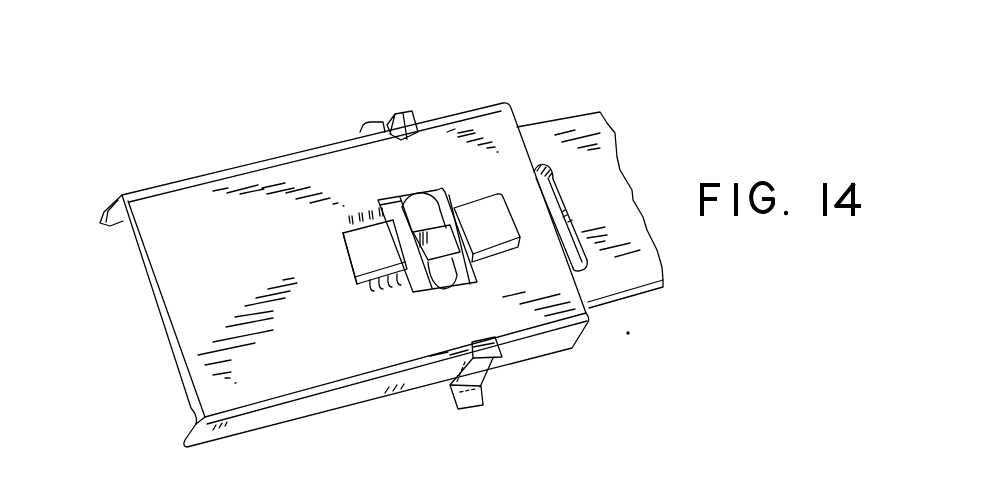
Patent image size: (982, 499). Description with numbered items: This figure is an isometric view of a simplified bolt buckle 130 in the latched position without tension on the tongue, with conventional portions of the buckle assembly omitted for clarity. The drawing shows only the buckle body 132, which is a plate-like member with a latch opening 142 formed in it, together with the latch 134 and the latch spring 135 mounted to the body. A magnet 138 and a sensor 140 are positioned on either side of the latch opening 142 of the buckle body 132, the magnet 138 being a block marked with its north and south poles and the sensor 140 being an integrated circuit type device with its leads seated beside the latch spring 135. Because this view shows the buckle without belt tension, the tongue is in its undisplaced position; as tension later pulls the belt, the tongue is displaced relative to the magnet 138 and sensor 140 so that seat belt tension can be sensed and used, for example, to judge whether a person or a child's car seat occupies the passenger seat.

The bolt buckle 130 is at (441, 90).
The buckle body 132 is at (233, 266).
The latch 134 is at (483, 392).
The latch spring 135 is at (412, 208).
The magnet 138 is at (503, 195).
The sensor 140 is at (365, 255).
The latch opening 142 is at (385, 200).